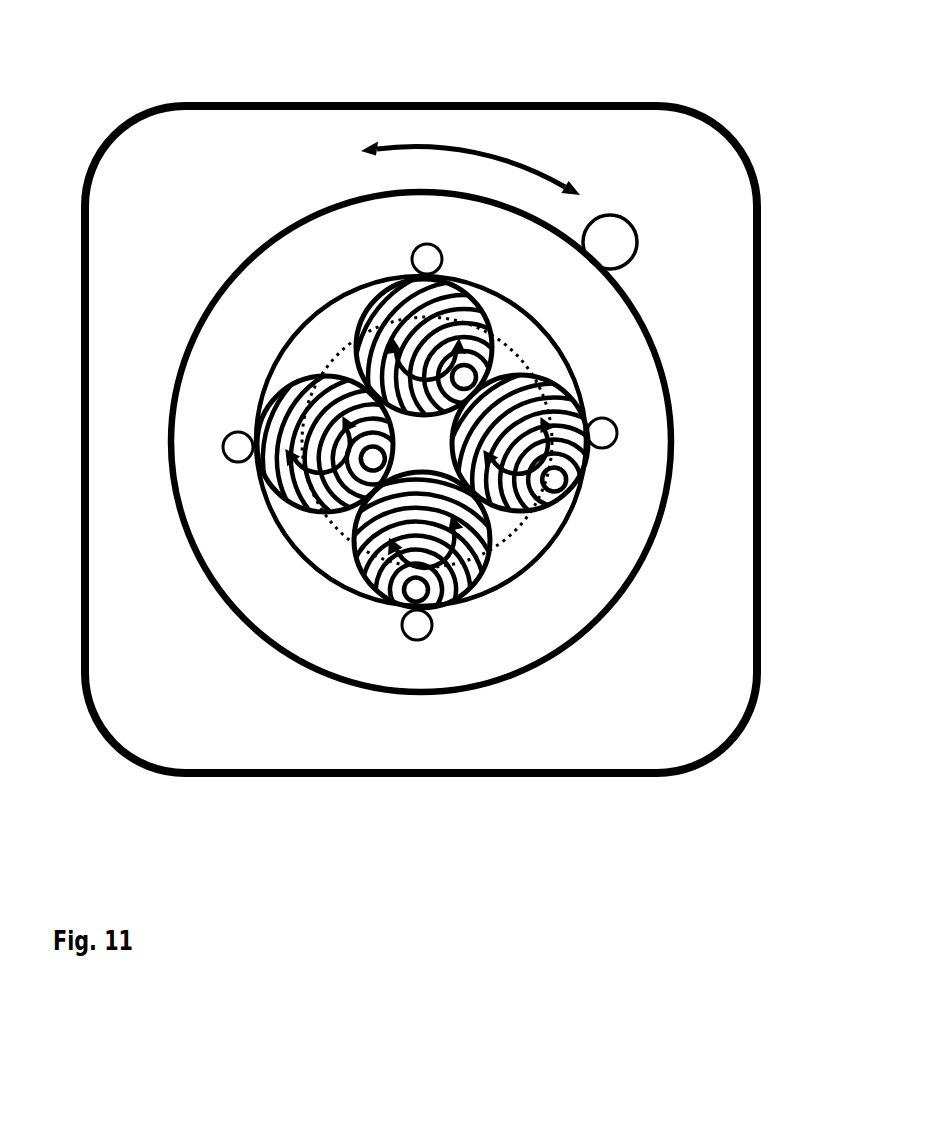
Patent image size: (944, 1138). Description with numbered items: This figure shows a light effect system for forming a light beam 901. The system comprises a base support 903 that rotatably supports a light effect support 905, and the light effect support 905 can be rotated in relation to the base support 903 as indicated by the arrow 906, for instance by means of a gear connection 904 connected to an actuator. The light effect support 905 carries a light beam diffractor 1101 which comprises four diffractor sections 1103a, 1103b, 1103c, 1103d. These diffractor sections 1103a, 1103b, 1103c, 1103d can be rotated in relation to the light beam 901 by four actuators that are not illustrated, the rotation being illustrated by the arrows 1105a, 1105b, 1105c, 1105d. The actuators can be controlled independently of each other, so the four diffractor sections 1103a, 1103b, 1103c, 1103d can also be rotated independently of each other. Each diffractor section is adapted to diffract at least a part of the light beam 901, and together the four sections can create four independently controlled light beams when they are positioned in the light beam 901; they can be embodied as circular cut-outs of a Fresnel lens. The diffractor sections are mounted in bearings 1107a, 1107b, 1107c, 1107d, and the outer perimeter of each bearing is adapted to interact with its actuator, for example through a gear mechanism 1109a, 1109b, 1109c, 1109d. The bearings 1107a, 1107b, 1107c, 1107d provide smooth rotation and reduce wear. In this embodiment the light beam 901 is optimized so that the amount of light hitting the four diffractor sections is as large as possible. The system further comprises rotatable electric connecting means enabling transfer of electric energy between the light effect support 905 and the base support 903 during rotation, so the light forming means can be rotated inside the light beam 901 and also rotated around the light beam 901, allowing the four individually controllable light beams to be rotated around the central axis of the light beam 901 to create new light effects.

The light beam 901 is at (523, 363).
The base support 903 is at (257, 103).
The gear connection 904 is at (606, 215).
The light effect support 905 is at (355, 197).
The arrow 906 is at (510, 158).
The light beam diffractor 1101 is at (286, 335).
The diffractor section 1103a is at (313, 477).
The diffractor section 1103b is at (455, 325).
The diffractor section 1103c is at (546, 497).
The diffractor section 1103d is at (458, 590).
The arrow 1105a is at (300, 468).
The arrow 1105b is at (445, 300).
The arrow 1105c is at (562, 485).
The arrow 1105d is at (398, 600).
The bearing 1107a is at (312, 510).
The bearing 1107b is at (385, 298).
The bearing 1107c is at (553, 503).
The bearing 1107d is at (463, 603).
The gear mechanism 1109a is at (236, 440).
The gear mechanism 1109b is at (420, 255).
The gear mechanism 1109c is at (605, 435).
The gear mechanism 1109d is at (417, 627).